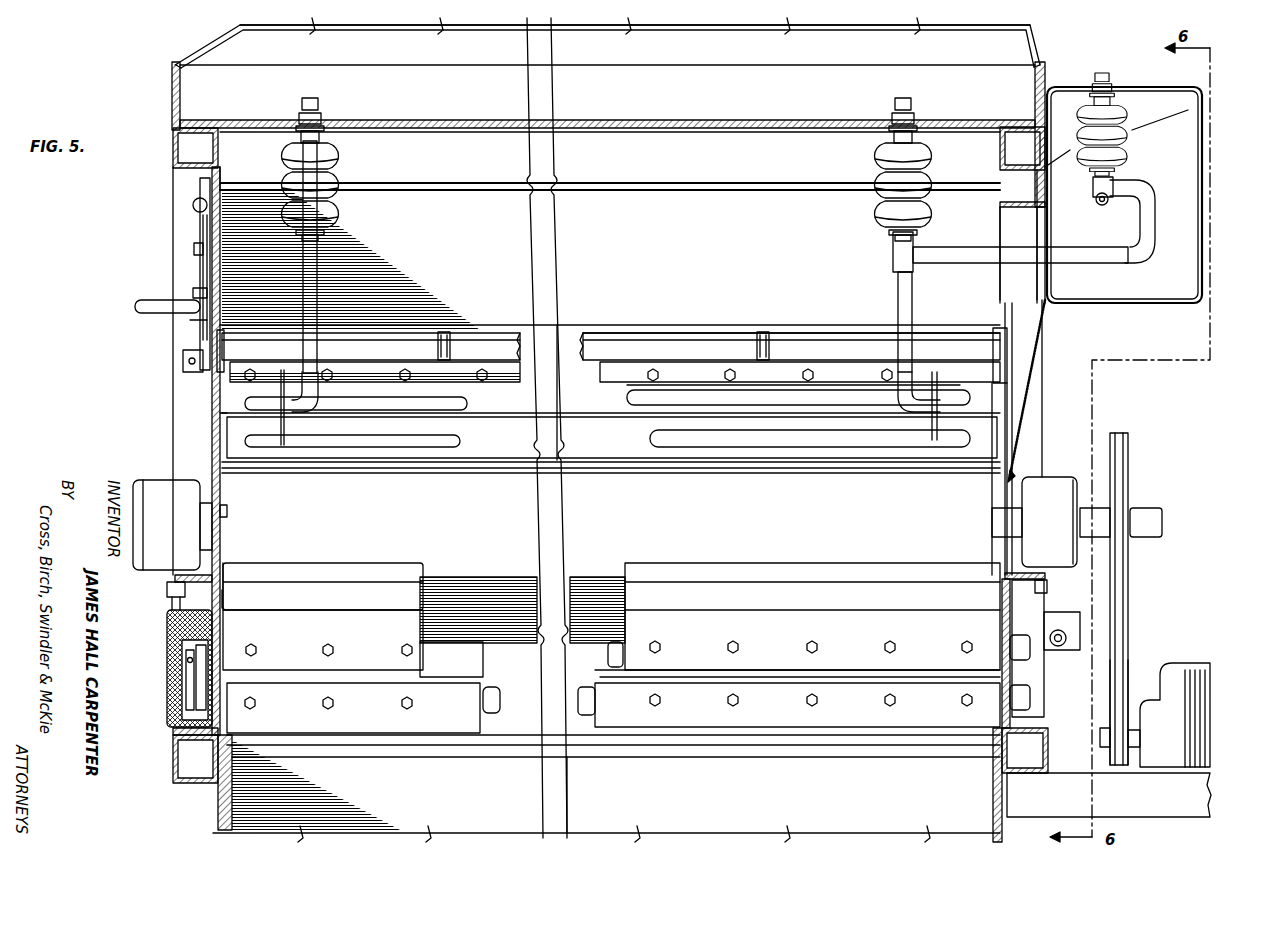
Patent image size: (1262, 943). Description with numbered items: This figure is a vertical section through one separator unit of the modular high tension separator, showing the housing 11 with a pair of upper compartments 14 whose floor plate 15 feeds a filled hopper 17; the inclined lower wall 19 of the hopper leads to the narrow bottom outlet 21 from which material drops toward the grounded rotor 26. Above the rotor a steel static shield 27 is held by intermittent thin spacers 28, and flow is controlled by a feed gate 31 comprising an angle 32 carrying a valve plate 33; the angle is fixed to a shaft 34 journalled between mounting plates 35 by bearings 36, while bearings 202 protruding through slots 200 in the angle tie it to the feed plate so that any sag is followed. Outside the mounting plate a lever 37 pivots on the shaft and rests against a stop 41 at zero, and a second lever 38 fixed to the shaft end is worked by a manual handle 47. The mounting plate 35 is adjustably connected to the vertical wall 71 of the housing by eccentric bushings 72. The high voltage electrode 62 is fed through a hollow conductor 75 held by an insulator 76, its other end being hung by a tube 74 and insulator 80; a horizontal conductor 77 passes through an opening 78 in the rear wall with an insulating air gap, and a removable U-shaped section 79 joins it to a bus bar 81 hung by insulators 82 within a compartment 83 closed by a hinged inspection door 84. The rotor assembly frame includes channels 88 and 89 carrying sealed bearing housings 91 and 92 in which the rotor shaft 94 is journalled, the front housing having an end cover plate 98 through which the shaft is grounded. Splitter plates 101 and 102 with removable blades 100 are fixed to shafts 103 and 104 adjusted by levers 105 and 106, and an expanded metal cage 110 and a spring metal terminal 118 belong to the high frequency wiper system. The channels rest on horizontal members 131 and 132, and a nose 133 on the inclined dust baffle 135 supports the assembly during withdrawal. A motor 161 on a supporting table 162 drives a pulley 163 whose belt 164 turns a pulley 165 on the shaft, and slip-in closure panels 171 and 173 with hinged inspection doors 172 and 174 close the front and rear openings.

The housing 11 is at (162, 97).
The compartments 14 is at (635, 39).
The floor plate 15 is at (652, 121).
The hopper 17 is at (610, 169).
The inclined lower wall 19 is at (610, 285).
The bottom outlet 21 is at (569, 392).
The rotor 26 is at (611, 472).
The static shield 27 is at (470, 402).
The spacers 28 is at (461, 419).
The feed gate 31 is at (634, 324).
The angle 32 is at (483, 334).
The valve plate 33 is at (479, 383).
The shaft 34 is at (181, 358).
The mounting plate 35 is at (199, 184).
The bearings 36 is at (224, 351).
The lever 37 is at (202, 232).
The second lever 38 is at (198, 328).
The stop 41 is at (193, 206).
The handle 47 is at (163, 300).
The high voltage electrode 62 is at (650, 432).
The vertical wall 71 is at (221, 175).
The eccentric bushings 72 is at (194, 255).
The tube 74 is at (328, 292).
The hollow conductor 75 is at (896, 300).
The insulator 76 is at (868, 160).
The horizontal conductor 77 is at (990, 249).
The horizontal opening 78 is at (1028, 234).
The U-shaped conductor section 79 is at (1143, 240).
The insulator 80 is at (342, 160).
The bus bar 81 is at (1098, 205).
The insulators 82 is at (1133, 160).
The compartment 83 is at (1140, 87).
The hinged inspection door 84 is at (1198, 138).
The channel 88 is at (223, 600).
The channel 89 is at (975, 597).
The bearing housing 91 is at (150, 478).
The bearing housing 92 is at (1052, 477).
The rotor shaft 94 is at (990, 522).
The end cover plate 98 is at (160, 480).
The removable blades 100 is at (368, 568).
The splitter plate 101 is at (428, 588).
The splitter plate 102 is at (485, 681).
The shaft 103 is at (620, 646).
The shaft 104 is at (492, 714).
The lever 105 is at (185, 688).
The lever 106 is at (172, 600).
The expanded metal cage 110 is at (168, 628).
The spring metal terminal 118 is at (1050, 655).
The horizontal member 131 is at (173, 760).
The horizontal member 132 is at (1048, 752).
The nose 133 is at (922, 758).
The inclined dust baffle 135 is at (673, 795).
The motor 161 is at (1162, 680).
The supporting table 162 is at (1109, 795).
The pulley 163 is at (1100, 737).
The belt 164 is at (1130, 660).
The pulley 165 is at (1129, 580).
The slip-in closure panel 171 is at (222, 507).
The hinged inspection door 172 is at (212, 417).
The slip-in closure panel 173 is at (1003, 492).
The hinged inspection door 174 is at (1022, 416).
The slots 200 is at (446, 330).
The bearings 202 is at (437, 348).